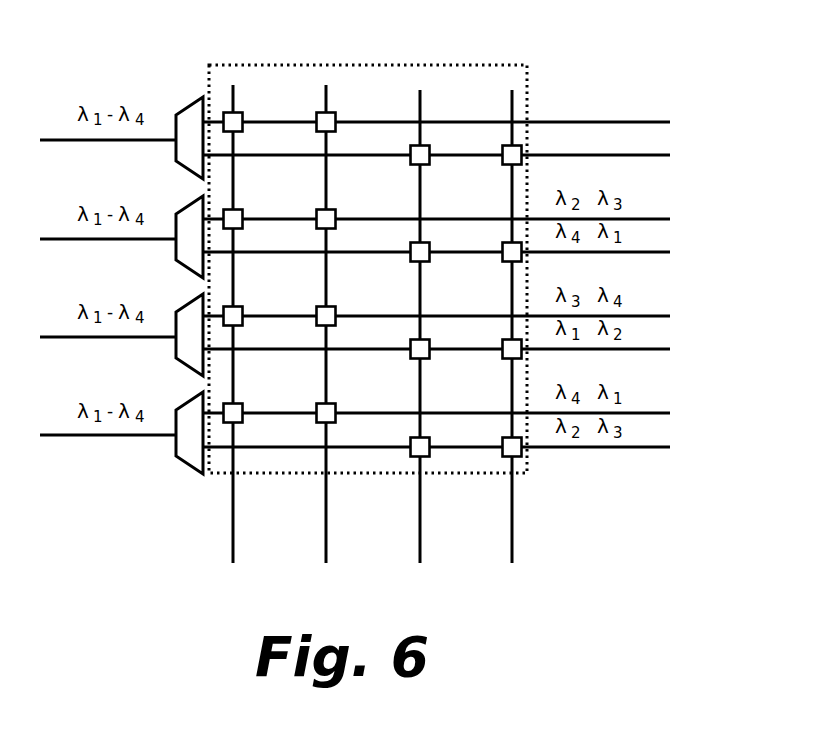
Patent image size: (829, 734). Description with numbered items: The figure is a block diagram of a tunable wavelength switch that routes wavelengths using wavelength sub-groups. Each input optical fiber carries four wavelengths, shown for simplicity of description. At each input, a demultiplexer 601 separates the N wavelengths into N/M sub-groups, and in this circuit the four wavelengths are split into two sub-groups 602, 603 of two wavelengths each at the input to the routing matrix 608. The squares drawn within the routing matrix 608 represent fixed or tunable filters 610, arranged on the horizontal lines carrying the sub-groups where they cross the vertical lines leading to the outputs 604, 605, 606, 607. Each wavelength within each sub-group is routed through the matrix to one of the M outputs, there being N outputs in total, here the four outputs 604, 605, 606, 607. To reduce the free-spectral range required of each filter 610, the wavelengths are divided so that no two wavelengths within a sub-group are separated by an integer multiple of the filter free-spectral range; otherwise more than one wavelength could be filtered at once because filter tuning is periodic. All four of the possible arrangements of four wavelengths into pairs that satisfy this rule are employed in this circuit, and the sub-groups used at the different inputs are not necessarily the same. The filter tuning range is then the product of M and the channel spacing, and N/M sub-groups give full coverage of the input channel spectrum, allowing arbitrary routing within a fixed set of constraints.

The demultiplexer 601 is at (195, 107).
The wavelength sub-group 602 is at (657, 122).
The wavelength sub-group 603 is at (657, 155).
The output 604 is at (233, 537).
The output 605 is at (326, 537).
The output 606 is at (420, 537).
The output 607 is at (512, 537).
The routing matrix 608 is at (480, 65).
The filter 610 is at (237, 133).